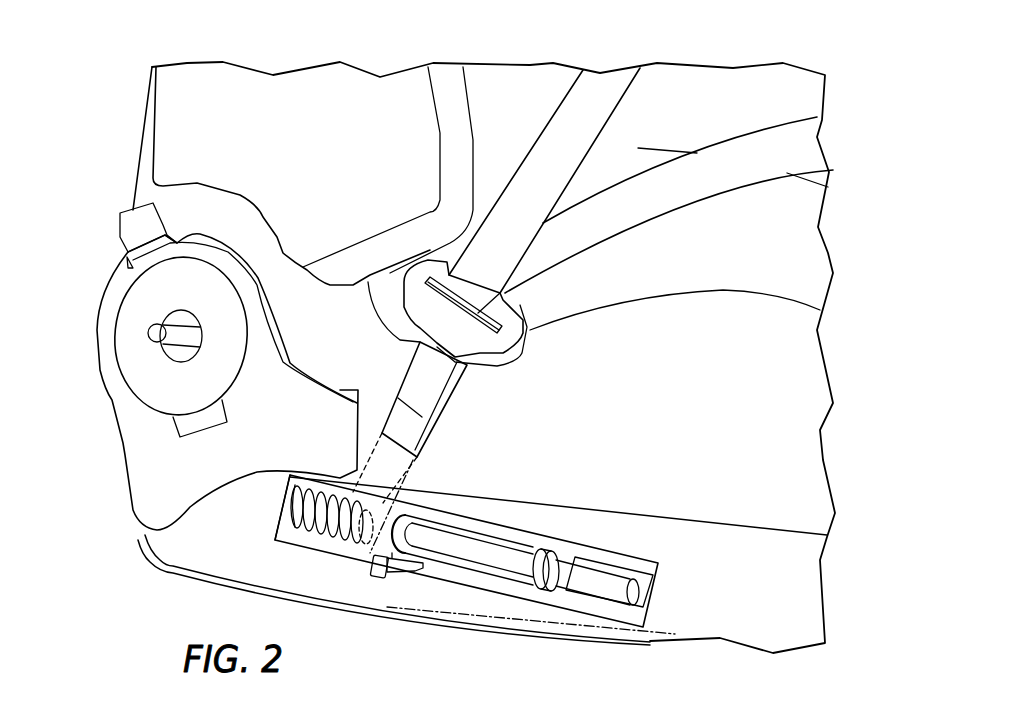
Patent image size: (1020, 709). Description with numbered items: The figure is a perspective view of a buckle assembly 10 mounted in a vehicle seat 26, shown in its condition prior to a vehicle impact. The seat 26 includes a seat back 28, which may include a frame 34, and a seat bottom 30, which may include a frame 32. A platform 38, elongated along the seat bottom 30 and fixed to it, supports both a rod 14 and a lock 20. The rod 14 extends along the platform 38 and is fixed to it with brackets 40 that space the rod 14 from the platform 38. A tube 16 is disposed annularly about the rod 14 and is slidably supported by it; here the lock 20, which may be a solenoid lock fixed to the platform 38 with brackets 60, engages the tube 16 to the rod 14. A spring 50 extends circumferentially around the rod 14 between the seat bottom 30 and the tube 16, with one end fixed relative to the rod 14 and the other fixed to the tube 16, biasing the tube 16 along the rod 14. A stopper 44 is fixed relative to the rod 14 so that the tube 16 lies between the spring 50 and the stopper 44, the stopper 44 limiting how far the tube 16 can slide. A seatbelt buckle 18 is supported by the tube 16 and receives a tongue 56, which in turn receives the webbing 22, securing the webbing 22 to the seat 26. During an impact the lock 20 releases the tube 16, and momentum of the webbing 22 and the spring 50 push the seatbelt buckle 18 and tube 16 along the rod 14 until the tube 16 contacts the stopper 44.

The buckle assembly 10 is at (197, 48).
The rod 14 is at (580, 577).
The tube 16 is at (398, 520).
The seatbelt buckle 18 is at (395, 417).
The lock 20 is at (370, 563).
The webbing 22 is at (543, 153).
The seat 26 is at (117, 83).
The seat back 28 is at (182, 143).
The seat bottom 30 is at (780, 560).
The frame 32 is at (205, 550).
The frame 34 is at (153, 193).
The platform 38 is at (530, 543).
The brackets 40 is at (290, 507).
The stopper 44 is at (541, 592).
The spring 50 is at (310, 490).
The tongue 56 is at (517, 340).
The brackets 60 is at (393, 577).